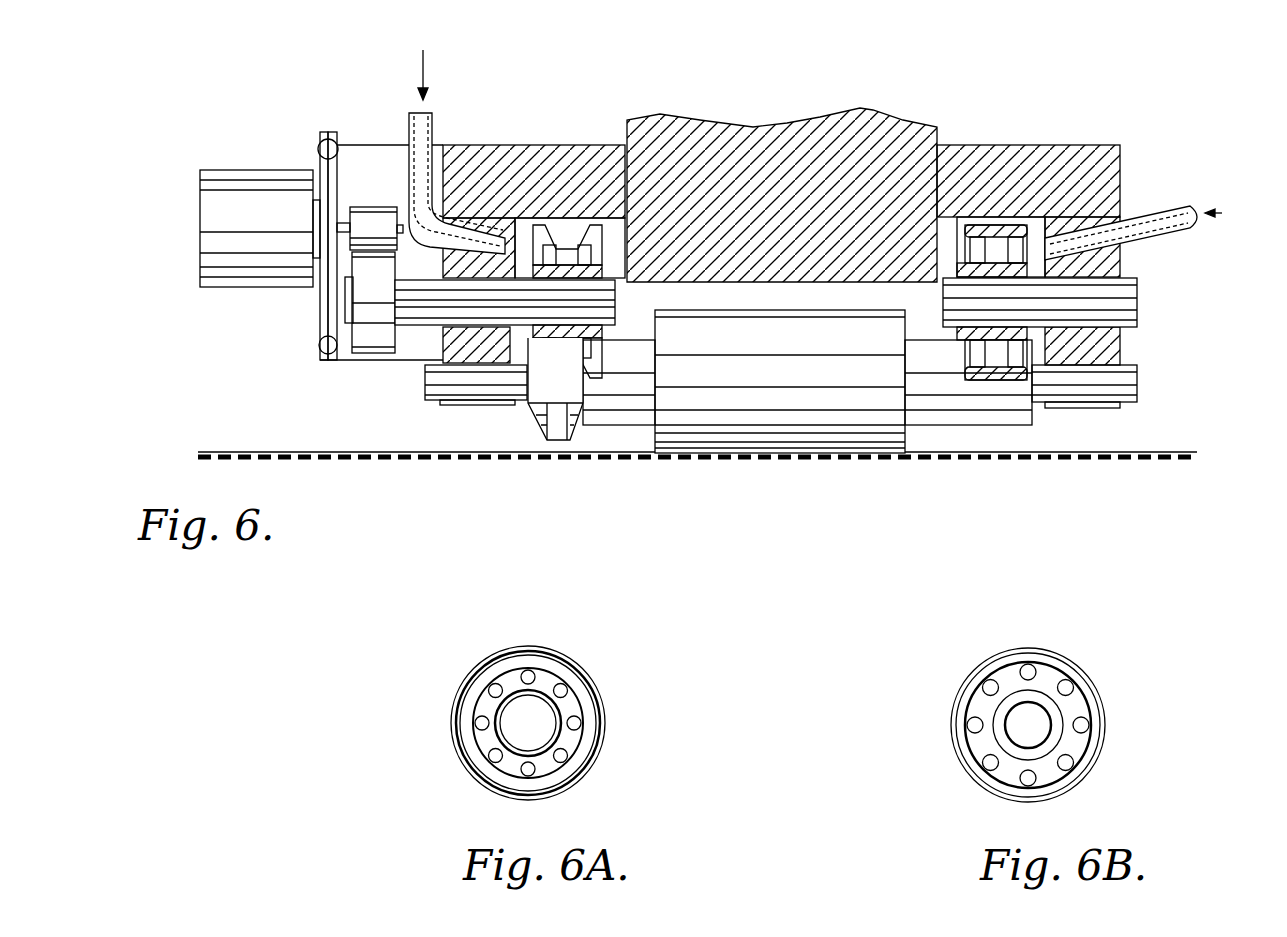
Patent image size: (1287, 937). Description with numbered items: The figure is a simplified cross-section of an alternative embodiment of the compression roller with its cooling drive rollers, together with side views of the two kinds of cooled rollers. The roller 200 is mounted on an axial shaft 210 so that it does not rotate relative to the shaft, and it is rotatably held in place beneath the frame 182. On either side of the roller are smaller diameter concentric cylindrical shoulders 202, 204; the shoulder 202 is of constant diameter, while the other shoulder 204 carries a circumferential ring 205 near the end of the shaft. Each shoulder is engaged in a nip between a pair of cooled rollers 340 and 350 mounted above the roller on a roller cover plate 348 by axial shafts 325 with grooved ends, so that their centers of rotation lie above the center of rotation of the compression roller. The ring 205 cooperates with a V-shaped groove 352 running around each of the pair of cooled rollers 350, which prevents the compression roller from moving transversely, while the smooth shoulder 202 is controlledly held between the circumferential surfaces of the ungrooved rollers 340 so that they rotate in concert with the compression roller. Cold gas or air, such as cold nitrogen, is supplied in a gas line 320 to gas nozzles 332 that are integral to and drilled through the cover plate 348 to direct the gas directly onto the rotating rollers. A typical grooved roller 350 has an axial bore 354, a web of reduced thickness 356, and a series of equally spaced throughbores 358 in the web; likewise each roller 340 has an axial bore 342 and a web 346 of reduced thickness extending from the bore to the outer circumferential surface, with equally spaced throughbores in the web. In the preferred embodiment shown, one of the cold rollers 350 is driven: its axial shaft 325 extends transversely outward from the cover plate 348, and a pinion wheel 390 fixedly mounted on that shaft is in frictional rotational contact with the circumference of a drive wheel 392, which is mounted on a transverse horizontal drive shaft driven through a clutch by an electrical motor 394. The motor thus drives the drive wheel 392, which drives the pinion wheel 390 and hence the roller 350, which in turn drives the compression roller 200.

In FIG. 6, the frame 182 is at (718, 120).
In FIG. 6, the roller 200 is at (803, 418).
In FIG. 6, the shoulder 202 is at (976, 402).
In FIG. 6, the shoulder 204 is at (624, 400).
In FIG. 6, the circumferential ring 205 is at (563, 368).
In FIG. 6, the axial shaft 210 is at (1125, 375).
In FIG. 6, the gas line 320 is at (438, 143).
In FIG. 6, the axial shaft 325 is at (457, 302).
In FIG. 6, the gas nozzle 332 is at (530, 247).
In FIG. 6, the cooled roller 340 is at (995, 237).
In FIG. 6B, the cooled roller 340 is at (1073, 660).
In FIG. 6B, the axial bore 342 is at (1022, 722).
In FIG. 6B, the web 346 is at (1073, 705).
In FIG. 6, the roller cover plate 348 is at (457, 143).
In FIG. 6B, the roller cover plate 348 is at (1047, 652).
In FIG. 6, the grooved cooled roller 350 is at (568, 240).
In FIG. 6A, the grooved cooled roller 350 is at (605, 720).
In FIG. 6, the V-shaped groove 352 is at (552, 425).
In FIG. 6A, the axial bore 354 is at (528, 718).
In FIG. 6A, the web of reduced thickness 356 is at (545, 682).
In FIG. 6A, the throughbores 358 is at (558, 755).
In FIG. 6, the pinion wheel 390 is at (373, 340).
In FIG. 6, the drive wheel 392 is at (372, 207).
In FIG. 6, the electrical motor 394 is at (257, 185).